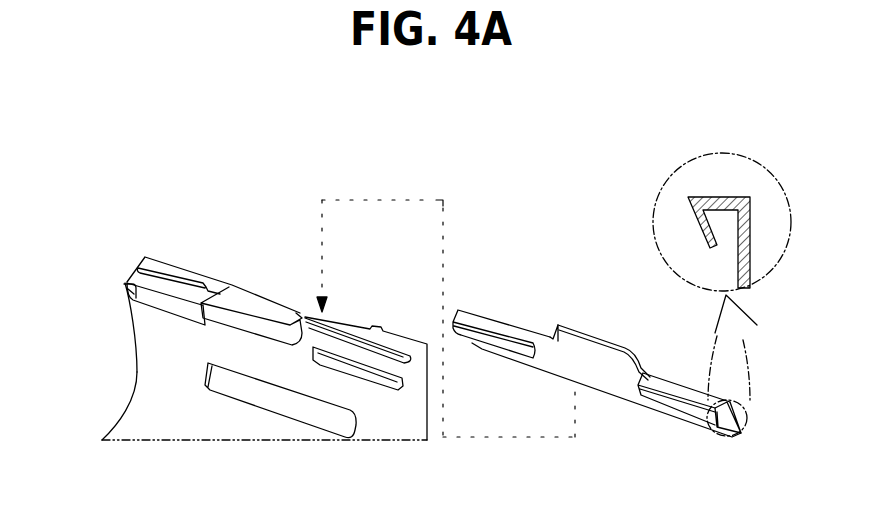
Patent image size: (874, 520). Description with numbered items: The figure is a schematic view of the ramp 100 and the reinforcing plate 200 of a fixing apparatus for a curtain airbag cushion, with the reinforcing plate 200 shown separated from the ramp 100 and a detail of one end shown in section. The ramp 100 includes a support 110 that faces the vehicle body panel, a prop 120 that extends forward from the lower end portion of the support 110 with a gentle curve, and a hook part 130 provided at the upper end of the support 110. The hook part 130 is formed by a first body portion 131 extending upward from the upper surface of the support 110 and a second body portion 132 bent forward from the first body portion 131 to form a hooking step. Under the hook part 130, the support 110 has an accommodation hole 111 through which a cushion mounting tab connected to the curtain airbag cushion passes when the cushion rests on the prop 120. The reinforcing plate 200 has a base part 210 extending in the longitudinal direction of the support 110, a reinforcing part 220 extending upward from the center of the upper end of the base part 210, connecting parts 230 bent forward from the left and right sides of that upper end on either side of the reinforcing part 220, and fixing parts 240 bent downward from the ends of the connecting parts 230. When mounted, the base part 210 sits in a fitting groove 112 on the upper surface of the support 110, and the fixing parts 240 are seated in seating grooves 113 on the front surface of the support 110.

The ramp 100 is at (227, 322).
The support 110 is at (143, 318).
The accommodation hole 111 is at (263, 396).
The fitting groove 112 is at (343, 335).
The seating groove 113 is at (370, 370).
The prop 120 is at (131, 428).
The hook part 130 is at (215, 252).
The first body portion 131 is at (298, 317).
The second body portion 132 is at (247, 298).
The reinforcing plate 200 is at (597, 358).
The base part 210 is at (614, 380).
The reinforcing part 220 is at (600, 340).
The connecting part 230 is at (662, 382).
The fixing part 240 is at (695, 413).